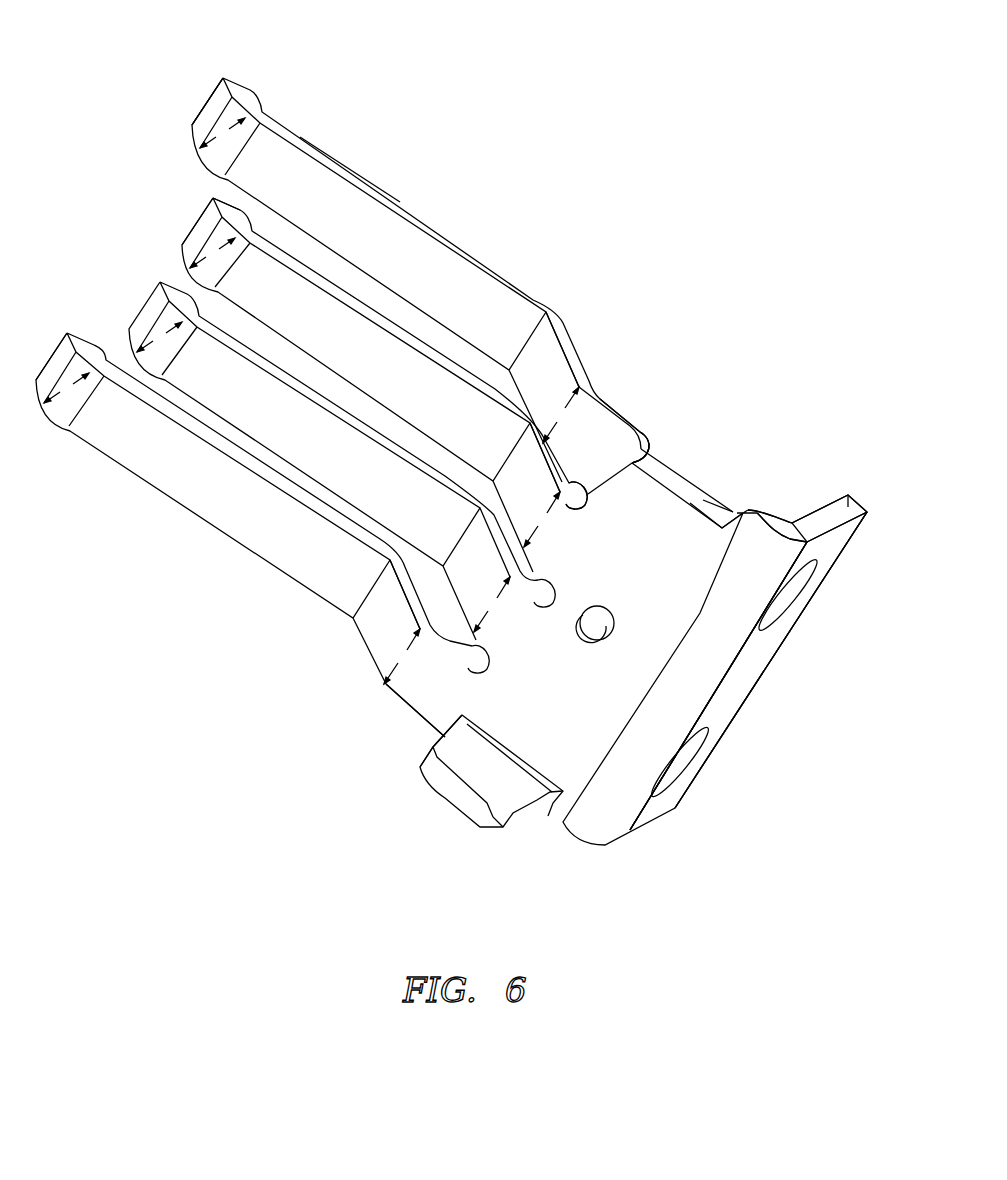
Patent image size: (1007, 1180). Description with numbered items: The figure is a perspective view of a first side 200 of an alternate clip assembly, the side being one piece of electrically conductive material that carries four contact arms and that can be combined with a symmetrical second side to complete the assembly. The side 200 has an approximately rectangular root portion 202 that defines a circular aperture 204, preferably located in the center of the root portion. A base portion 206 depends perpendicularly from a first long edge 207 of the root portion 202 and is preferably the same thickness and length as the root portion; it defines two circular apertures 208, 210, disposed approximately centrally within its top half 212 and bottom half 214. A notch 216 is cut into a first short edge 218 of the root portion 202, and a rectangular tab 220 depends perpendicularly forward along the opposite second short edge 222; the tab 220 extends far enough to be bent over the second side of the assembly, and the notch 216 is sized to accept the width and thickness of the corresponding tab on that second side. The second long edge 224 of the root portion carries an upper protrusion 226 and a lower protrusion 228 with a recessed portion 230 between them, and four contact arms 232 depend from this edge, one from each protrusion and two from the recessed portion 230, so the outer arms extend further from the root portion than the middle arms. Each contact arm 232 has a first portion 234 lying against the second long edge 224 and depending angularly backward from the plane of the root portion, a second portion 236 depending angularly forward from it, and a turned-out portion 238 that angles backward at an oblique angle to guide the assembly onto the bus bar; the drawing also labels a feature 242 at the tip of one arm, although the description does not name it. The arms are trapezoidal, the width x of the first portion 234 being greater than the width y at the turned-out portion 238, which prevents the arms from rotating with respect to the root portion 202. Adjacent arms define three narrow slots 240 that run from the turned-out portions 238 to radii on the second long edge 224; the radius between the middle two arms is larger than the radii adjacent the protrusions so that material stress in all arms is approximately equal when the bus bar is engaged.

The first side 200 is at (662, 103).
The rectangular root portion 202 is at (682, 596).
The circular aperture 204 is at (593, 640).
The base portion 206 is at (844, 527).
The first long edge 207 is at (690, 633).
The circular aperture 208 is at (793, 600).
The circular aperture 210 is at (680, 757).
The top half 212 is at (834, 577).
The bottom half 214 is at (723, 737).
The notch 216 is at (692, 504).
The first short edge 218 is at (655, 433).
The rectangular tab 220 is at (497, 783).
The second short edge 222 is at (423, 727).
The second long edge 224 is at (645, 466).
The upper protrusion 226 is at (600, 430).
The lower protrusion 228 is at (430, 690).
The recessed portion 230 is at (563, 542).
The contact arm 232 is at (187, 80).
The first portion 234 is at (553, 355).
The second portion 236 is at (370, 230).
The turned-out portion 238 is at (222, 78).
The narrow slot 240 is at (363, 283).
The tip edge 242 is at (212, 232).